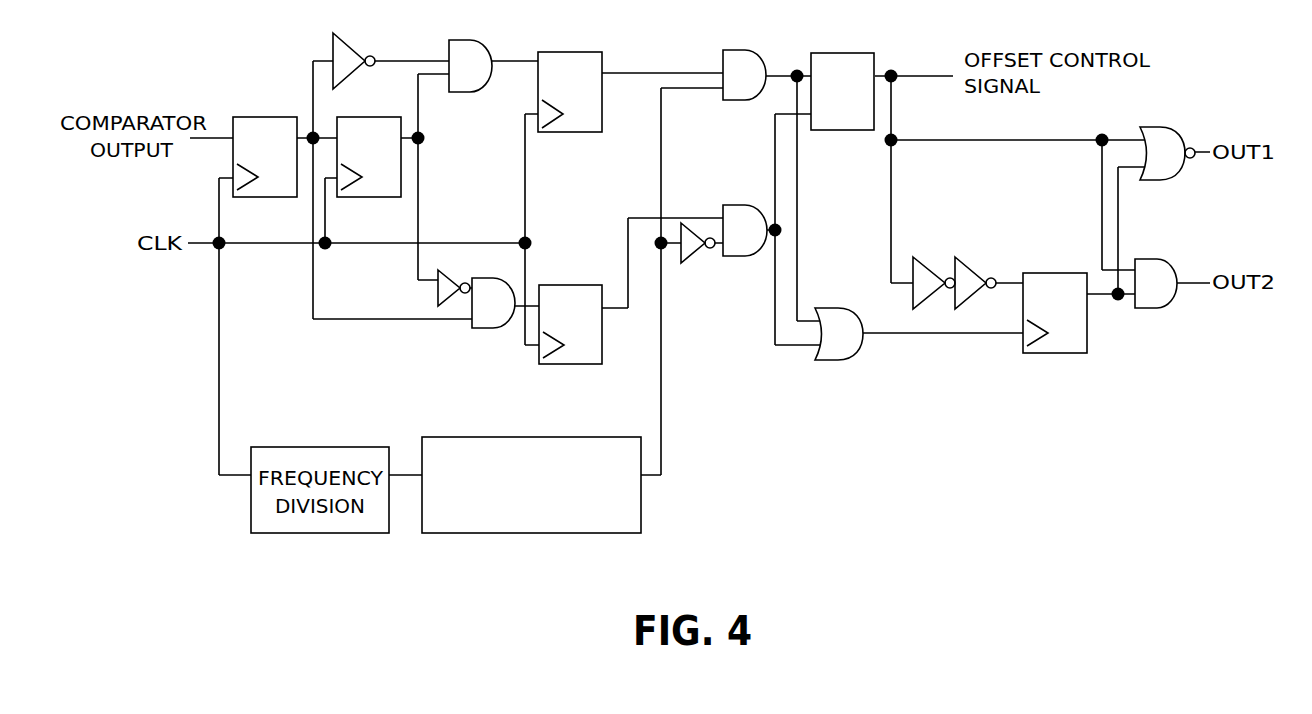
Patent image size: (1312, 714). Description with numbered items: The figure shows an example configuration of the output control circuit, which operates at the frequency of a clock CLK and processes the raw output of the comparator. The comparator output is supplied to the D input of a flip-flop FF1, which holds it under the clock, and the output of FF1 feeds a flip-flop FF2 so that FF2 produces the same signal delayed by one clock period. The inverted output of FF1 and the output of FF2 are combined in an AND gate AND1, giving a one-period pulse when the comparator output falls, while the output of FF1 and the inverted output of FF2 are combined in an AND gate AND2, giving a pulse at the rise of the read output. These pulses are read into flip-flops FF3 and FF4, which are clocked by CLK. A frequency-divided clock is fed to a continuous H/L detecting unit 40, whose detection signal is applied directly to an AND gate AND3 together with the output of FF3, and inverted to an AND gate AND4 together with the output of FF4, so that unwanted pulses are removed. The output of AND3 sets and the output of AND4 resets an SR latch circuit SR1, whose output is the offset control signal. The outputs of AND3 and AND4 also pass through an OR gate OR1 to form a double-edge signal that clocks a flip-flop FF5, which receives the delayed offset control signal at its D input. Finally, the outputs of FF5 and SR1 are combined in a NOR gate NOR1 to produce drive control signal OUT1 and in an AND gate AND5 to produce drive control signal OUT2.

The continuous H/L detecting unit 40 is at (531, 465).
The flip-flop FF1 is at (265, 142).
The flip-flop FF2 is at (369, 142).
The flip-flop FF3 is at (570, 77).
The flip-flop FF4 is at (570, 309).
The flip-flop FF5 is at (1055, 298).
The AND gate AND1 is at (473, 51).
The AND gate AND2 is at (486, 286).
The AND gate AND3 is at (736, 62).
The AND gate AND4 is at (740, 217).
The AND gate AND5 is at (1159, 266).
The NOR gate NOR1 is at (1161, 135).
The OR gate OR1 is at (841, 322).
The SR latch circuit SR1 is at (842, 76).